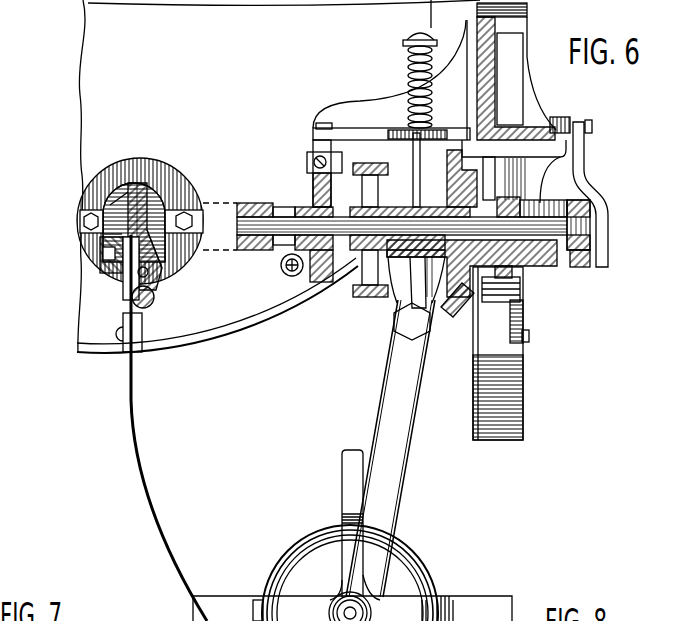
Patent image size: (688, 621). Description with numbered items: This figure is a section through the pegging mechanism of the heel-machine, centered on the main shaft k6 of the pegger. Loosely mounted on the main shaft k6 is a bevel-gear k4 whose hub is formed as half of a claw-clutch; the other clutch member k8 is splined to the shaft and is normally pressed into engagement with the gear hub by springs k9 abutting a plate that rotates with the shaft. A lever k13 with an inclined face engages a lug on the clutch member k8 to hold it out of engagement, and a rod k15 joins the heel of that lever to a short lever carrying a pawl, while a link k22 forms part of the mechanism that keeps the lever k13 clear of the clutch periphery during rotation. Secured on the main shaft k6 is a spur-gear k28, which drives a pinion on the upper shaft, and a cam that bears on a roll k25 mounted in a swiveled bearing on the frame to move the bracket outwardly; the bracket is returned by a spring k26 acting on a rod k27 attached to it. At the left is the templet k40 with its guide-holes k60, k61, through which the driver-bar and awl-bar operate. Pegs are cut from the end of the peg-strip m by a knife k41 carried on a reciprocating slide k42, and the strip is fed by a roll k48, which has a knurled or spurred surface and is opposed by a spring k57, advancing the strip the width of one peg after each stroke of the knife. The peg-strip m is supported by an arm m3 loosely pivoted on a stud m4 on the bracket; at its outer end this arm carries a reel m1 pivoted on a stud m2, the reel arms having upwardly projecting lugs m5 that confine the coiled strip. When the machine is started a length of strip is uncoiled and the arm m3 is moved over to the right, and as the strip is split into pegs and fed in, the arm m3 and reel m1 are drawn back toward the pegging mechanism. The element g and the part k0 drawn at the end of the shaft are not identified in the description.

The templet k40 is at (131, 185).
The guide-hole k61 is at (110, 205).
The pin g is at (115, 193).
The guide-hole k60 is at (122, 224).
The knife k41 is at (103, 250).
The reciprocating slide k42 is at (103, 268).
The roll k48 is at (155, 298).
The spring k57 is at (125, 322).
The peg-strip m is at (138, 475).
The shaft nut k0 is at (590, 220).
The main shaft k6 is at (238, 200).
The roll k25 is at (313, 175).
The spur-gear k28 is at (369, 290).
The rod k27 is at (415, 158).
The spring k26 is at (407, 62).
The link k22 is at (584, 160).
The spring k9 is at (552, 201).
The clutch member k8 is at (545, 268).
The lever k13 is at (521, 300).
The rod k15 is at (524, 335).
The bevel-gear k4 is at (465, 305).
The stud m4 is at (410, 325).
The arm m3 is at (385, 483).
The stud m2 is at (347, 612).
The reel m1 is at (347, 477).
The lugs m5 is at (340, 518).